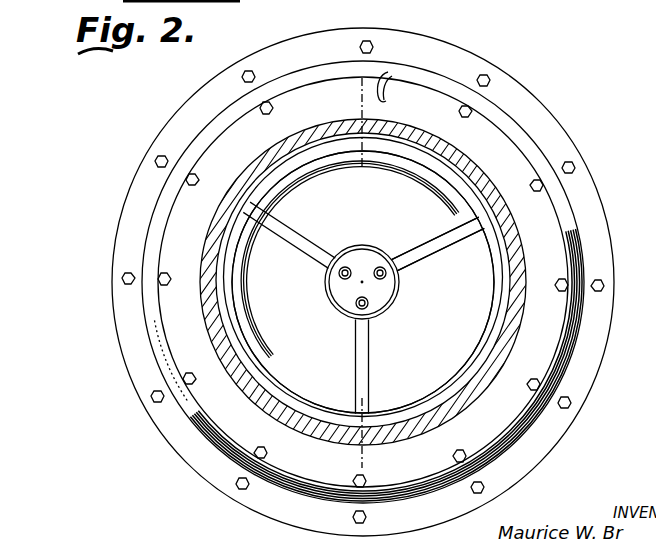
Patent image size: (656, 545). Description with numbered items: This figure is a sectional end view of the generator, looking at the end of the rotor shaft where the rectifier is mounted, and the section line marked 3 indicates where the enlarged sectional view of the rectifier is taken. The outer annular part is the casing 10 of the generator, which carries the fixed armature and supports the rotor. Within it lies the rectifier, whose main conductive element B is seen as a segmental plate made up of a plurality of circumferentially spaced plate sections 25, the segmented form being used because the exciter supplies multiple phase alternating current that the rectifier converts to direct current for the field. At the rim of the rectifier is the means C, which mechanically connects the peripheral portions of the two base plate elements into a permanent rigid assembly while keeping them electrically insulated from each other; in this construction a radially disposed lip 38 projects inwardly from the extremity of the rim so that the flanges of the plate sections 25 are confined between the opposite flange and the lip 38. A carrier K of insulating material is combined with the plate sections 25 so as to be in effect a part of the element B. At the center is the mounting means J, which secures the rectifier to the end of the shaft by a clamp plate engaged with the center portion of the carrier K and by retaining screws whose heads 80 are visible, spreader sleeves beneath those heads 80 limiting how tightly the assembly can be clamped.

The casing 10 is at (524, 129).
The means connecting the peripheral portions C is at (494, 246).
The main conductive element B is at (363, 277).
The lip 38 is at (290, 164).
The plate sections 25 is at (363, 308).
The carrier K is at (429, 251).
The mounting means J is at (348, 293).
The heads of the screw fasteners 80 is at (339, 274).
The section line 3- 3 is at (358, 96).